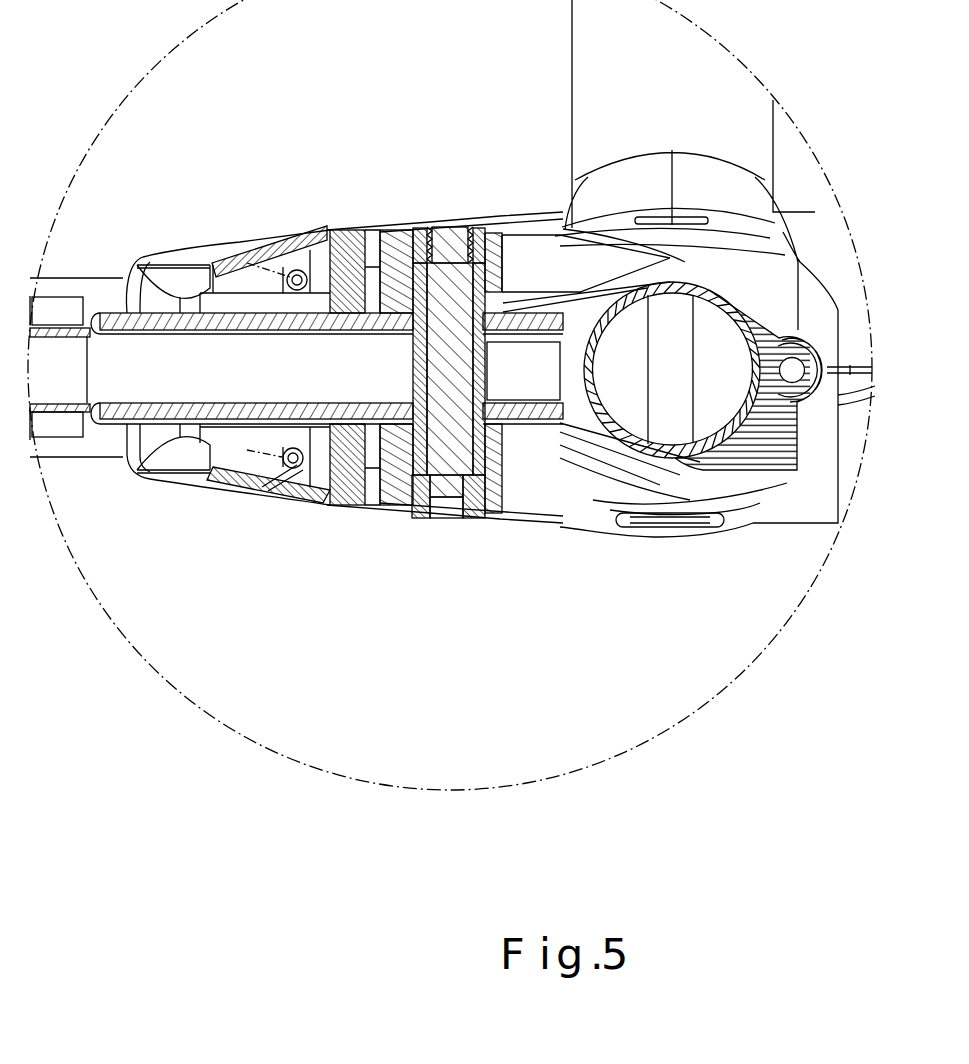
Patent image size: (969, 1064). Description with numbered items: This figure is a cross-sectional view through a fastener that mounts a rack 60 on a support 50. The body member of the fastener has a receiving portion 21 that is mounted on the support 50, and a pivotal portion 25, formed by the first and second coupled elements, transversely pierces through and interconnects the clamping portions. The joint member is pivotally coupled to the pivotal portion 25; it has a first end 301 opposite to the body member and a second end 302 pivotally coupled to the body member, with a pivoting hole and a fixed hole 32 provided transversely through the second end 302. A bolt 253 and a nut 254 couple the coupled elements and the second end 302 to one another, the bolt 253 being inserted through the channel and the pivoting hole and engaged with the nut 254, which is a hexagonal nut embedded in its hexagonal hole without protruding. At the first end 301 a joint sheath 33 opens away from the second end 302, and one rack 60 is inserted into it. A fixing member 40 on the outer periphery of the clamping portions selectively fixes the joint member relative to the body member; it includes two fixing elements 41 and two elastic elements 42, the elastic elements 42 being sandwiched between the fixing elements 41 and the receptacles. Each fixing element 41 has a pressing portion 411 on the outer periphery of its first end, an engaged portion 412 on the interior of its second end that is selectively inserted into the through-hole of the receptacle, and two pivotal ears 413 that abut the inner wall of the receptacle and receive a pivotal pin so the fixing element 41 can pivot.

The receiving portion 21 is at (682, 263).
The pivotal portion 25 is at (471, 370).
The bolt 253 is at (443, 237).
The nut 254 is at (480, 237).
The fixed hole 32 is at (370, 317).
The joint sheath 33 is at (98, 342).
The fixing member 40 is at (242, 125).
The fixing element 41 is at (315, 118).
The pressing portion 411 is at (256, 252).
The engaged portion 412 is at (348, 293).
The pivotal ears 413 is at (300, 255).
The elastic element 42 is at (253, 272).
The support 50 is at (705, 302).
The rack 60 is at (45, 412).
The first end 301 is at (107, 458).
The second end 302 is at (584, 455).